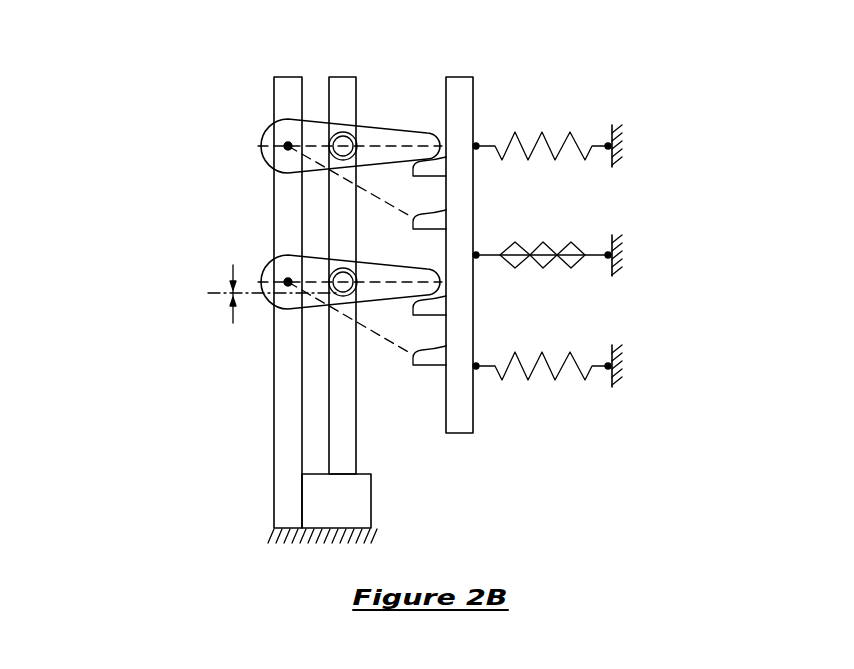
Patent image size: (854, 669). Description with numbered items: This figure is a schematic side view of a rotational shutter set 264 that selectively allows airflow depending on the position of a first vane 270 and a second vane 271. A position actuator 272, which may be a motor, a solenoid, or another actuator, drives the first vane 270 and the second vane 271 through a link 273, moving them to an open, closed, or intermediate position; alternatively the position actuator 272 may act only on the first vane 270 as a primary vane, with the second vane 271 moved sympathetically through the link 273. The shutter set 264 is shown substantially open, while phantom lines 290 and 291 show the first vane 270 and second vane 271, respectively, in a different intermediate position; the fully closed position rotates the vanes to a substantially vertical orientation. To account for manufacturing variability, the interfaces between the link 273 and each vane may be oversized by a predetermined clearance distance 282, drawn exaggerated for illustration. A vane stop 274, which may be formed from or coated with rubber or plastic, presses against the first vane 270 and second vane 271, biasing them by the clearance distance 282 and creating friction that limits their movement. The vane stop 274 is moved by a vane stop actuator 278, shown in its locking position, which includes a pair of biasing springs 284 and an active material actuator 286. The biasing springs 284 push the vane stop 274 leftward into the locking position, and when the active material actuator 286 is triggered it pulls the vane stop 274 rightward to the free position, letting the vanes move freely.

The rotational shutter set 264 is at (99, 140).
The first vane 270 is at (392, 128).
The second vane 271 is at (287, 260).
The position actuator 272 is at (356, 518).
The link 273 is at (343, 92).
The vane stop 274 is at (467, 213).
The vane stop actuator 278 is at (532, 96).
The predetermined clearance distance 282 is at (233, 316).
The biasing springs 284 is at (597, 128).
The active material actuator 286 is at (528, 262).
The phantom lines 290 is at (340, 172).
The phantom lines 291 is at (384, 343).